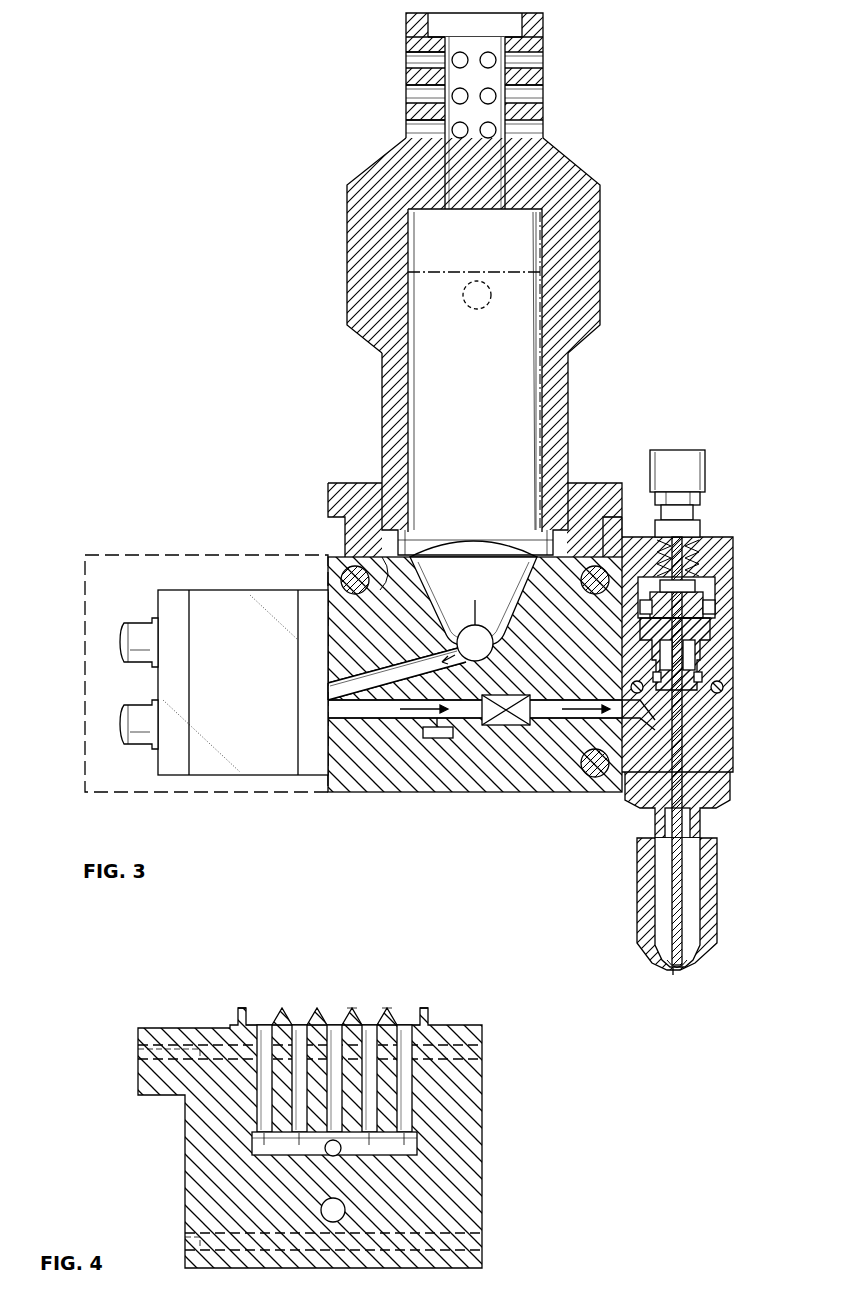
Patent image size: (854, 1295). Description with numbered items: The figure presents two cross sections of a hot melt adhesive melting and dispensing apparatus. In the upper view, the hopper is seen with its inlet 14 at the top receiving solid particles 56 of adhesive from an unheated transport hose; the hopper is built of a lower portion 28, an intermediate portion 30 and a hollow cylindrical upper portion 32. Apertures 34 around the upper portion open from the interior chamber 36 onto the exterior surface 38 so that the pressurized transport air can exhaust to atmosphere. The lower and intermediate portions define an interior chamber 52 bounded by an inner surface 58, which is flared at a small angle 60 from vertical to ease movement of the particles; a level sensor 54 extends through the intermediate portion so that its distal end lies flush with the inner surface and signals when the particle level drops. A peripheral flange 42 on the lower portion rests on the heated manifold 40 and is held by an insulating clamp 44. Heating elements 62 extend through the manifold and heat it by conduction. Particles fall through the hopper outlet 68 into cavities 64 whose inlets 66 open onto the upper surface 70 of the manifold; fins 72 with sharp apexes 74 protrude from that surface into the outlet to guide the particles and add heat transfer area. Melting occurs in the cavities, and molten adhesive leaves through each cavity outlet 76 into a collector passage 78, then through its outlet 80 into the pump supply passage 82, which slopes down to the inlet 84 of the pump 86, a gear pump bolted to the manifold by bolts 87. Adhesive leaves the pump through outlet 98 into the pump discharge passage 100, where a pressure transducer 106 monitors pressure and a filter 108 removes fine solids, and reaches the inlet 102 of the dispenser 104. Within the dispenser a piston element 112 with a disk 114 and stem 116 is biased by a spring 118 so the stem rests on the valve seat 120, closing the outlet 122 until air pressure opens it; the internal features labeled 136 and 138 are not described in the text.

In FIG. 3, the inlet 14 is at (496, 11).
In FIG. 3, the lower portion 28 is at (568, 386).
In FIG. 3, the intermediate portion 30 is at (600, 208).
In FIG. 3, the upper portion 32 is at (543, 80).
In FIG. 3, the apertures 34 is at (406, 132).
In FIG. 3, the interior chamber 36 is at (470, 48).
In FIG. 3, the exterior surface 38 is at (543, 40).
In FIG. 3, the heated manifold 40 is at (470, 794).
In FIG. 4, the heated manifold 40 is at (183, 1150).
In FIG. 3, the peripheral flange 42 is at (587, 520).
In FIG. 3, the clamp 44 is at (612, 487).
In FIG. 3, the interior chamber 52 is at (522, 255).
In FIG. 3, the level sensor 54 is at (468, 308).
In FIG. 3, the solid particles 56 is at (456, 272).
In FIG. 3, the inner surface 58 is at (536, 314).
In FIG. 3, the angle 60 is at (540, 482).
In FIG. 3, the heating elements 62 is at (362, 592).
In FIG. 4, the heating elements 62 is at (484, 1088).
In FIG. 3, the cavities 64 is at (482, 590).
In FIG. 4, the cavities 64 is at (265, 1106).
In FIG. 4, the inlet 66 is at (266, 1025).
In FIG. 3, the outlet 68 is at (385, 590).
In FIG. 4, the upper surface 70 is at (465, 1025).
In FIG. 4, the fins 72 is at (240, 1010).
In FIG. 4, the apex 74 is at (352, 1008).
In FIG. 4, the outlet 76 is at (265, 1147).
In FIG. 3, the collector passage 78 is at (492, 645).
In FIG. 4, the collector passage 78 is at (418, 1148).
In FIG. 4, the outlet 80 is at (334, 1157).
In FIG. 3, the pump supply passage 82 is at (393, 673).
In FIG. 3, the inlet 84 is at (343, 680).
In FIG. 3, the pump 86 is at (250, 677).
In FIG. 3, the bolts 87 is at (135, 620).
In FIG. 3, the outlet 98 is at (328, 698).
In FIG. 3, the pump discharge passage 100 is at (383, 718).
In FIG. 4, the pump discharge passage 100 is at (345, 1213).
In FIG. 3, the inlet 102 is at (640, 722).
In FIG. 3, the dispenser 104 is at (735, 758).
In FIG. 3, the pressure transducer 106 is at (437, 738).
In FIG. 3, the filter 108 is at (493, 725).
In FIG. 3, the piston element 112 is at (700, 678).
In FIG. 3, the disk 114 is at (700, 602).
In FIG. 3, the stem 116 is at (684, 714).
In FIG. 3, the spring 118 is at (690, 563).
In FIG. 3, the valve seat 120 is at (680, 965).
In FIG. 3, the outlet 122 is at (676, 972).
In FIG. 3, the piston chamber 136 is at (698, 585).
In FIG. 3, the guide 138 is at (688, 635).